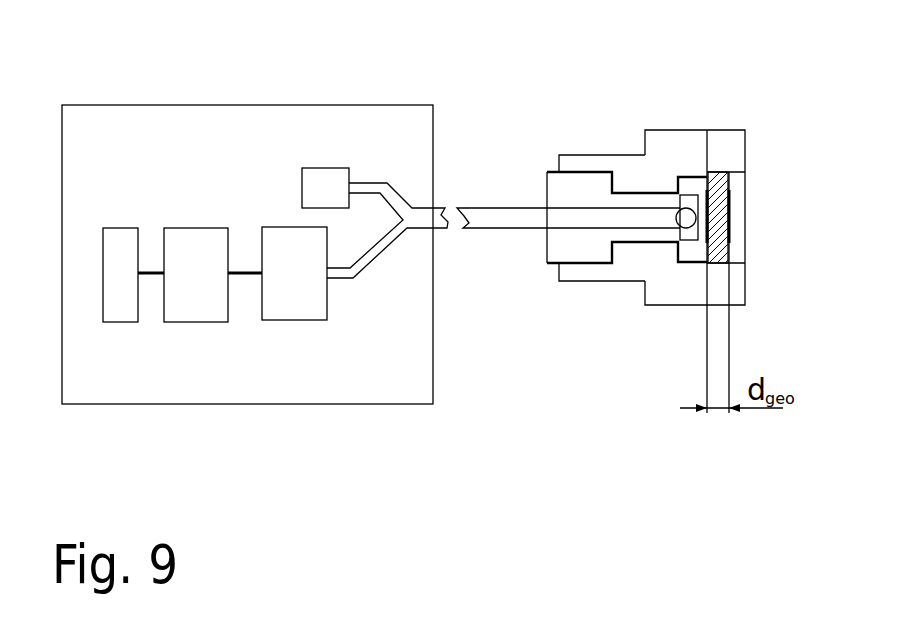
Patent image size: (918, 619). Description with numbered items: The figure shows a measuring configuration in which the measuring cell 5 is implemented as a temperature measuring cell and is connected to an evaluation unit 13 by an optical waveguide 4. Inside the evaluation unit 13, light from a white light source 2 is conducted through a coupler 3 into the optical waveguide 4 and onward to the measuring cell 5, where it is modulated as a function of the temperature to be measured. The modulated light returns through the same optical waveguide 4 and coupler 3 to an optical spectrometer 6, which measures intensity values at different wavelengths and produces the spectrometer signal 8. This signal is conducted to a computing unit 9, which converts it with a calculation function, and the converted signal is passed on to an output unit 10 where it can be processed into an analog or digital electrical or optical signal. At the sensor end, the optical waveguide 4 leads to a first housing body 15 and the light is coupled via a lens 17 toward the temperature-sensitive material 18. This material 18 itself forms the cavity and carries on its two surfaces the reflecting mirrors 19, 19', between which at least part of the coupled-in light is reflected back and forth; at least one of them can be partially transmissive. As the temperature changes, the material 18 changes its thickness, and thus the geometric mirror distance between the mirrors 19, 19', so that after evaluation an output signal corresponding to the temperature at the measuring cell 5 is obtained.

The white light source 2 is at (344, 104).
The coupler 3 is at (391, 139).
The optical waveguide 4 is at (568, 154).
The measuring cell 5 is at (713, 214).
The optical spectrometer 6 is at (322, 358).
The spectrometer signal 8 is at (211, 381).
The computing unit 9 is at (190, 358).
The output unit 10 is at (93, 359).
The evaluation unit 13 is at (247, 202).
The first housing body 15 is at (615, 259).
The lens 17 is at (651, 160).
The temperature-sensitive material 18 is at (760, 215).
The mirror 19 is at (662, 275).
The mirror 19' is at (770, 275).